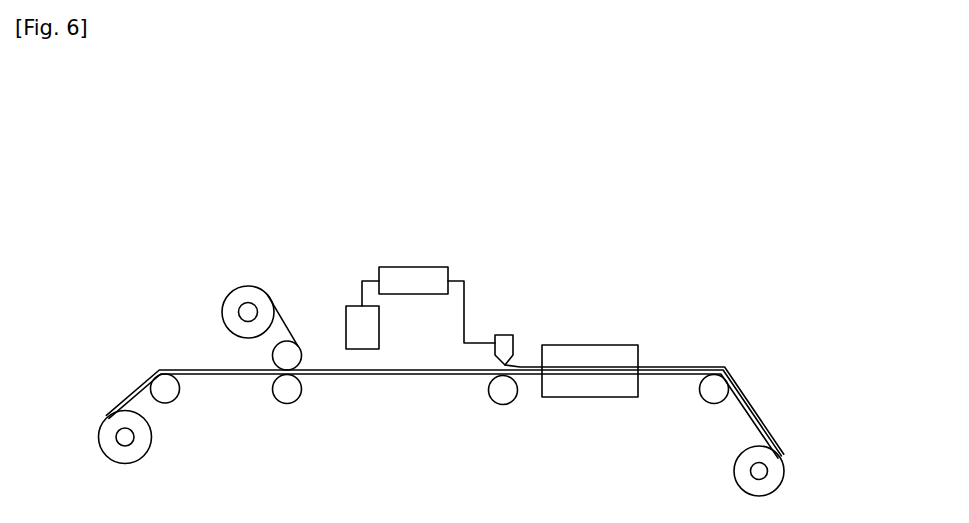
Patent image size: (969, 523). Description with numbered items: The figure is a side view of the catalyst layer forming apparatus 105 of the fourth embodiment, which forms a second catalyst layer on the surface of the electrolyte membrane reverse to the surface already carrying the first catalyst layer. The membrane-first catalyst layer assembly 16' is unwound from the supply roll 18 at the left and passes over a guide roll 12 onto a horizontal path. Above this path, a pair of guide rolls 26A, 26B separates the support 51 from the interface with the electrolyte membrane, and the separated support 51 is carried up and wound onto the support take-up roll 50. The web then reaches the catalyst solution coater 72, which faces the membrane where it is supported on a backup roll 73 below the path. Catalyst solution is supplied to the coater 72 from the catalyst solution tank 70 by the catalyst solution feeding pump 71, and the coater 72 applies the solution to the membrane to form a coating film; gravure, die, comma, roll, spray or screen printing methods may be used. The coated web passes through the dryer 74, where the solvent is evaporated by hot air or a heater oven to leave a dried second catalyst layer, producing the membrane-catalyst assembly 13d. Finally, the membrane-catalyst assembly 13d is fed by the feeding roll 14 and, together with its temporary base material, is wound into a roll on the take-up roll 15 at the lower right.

The catalyst layer forming apparatus 105 is at (640, 119).
The membrane-first catalyst layer assembly 16' is at (443, 373).
The membrane-catalyst assembly 13d is at (663, 367).
The supply roll 18 is at (100, 434).
The guide roll 12 is at (163, 403).
The support take-up roll 50 is at (230, 296).
The support 51 is at (286, 313).
The guide roll 26A is at (273, 356).
The guide roll 26B is at (287, 404).
The catalyst solution tank 70 is at (353, 304).
The catalyst solution feeding pump 71 is at (437, 267).
The catalyst solution coater 72 is at (507, 335).
The backup roll 73 is at (507, 405).
The dryer 74 is at (602, 345).
The feeding roll 14 is at (712, 403).
The take-up roll 15 is at (785, 476).